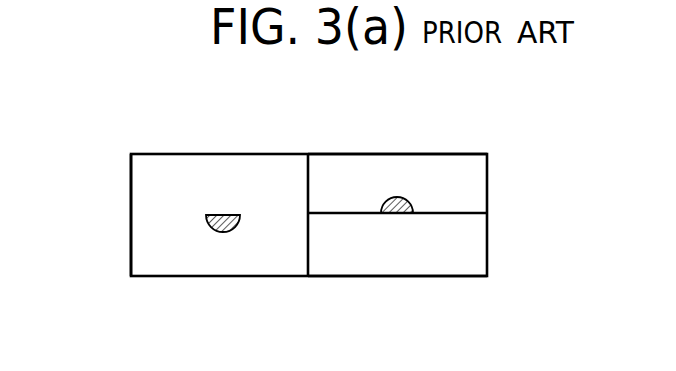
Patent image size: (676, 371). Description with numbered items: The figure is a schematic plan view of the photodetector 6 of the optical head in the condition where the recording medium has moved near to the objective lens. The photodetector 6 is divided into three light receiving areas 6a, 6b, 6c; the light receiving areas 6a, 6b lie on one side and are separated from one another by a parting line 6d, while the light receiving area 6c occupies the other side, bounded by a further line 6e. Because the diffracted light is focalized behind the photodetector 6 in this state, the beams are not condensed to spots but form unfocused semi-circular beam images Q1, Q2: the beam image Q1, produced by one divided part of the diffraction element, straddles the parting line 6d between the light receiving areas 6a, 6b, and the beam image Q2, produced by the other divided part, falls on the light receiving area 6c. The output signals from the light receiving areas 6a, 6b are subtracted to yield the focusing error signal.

The photodetector 6 is at (62, 204).
The light receiving area 6a is at (380, 165).
The light receiving area 6b is at (416, 268).
The light receiving area 6c is at (212, 268).
The parting line 6d is at (487, 213).
The dividing line 6e is at (306, 278).
The beam image Q1 is at (409, 197).
The beam image Q2 is at (225, 213).